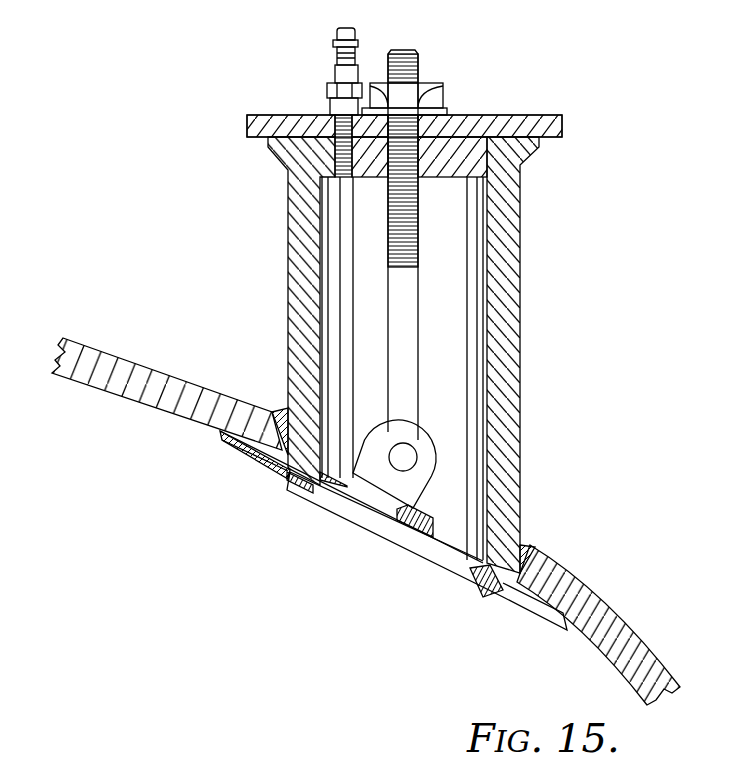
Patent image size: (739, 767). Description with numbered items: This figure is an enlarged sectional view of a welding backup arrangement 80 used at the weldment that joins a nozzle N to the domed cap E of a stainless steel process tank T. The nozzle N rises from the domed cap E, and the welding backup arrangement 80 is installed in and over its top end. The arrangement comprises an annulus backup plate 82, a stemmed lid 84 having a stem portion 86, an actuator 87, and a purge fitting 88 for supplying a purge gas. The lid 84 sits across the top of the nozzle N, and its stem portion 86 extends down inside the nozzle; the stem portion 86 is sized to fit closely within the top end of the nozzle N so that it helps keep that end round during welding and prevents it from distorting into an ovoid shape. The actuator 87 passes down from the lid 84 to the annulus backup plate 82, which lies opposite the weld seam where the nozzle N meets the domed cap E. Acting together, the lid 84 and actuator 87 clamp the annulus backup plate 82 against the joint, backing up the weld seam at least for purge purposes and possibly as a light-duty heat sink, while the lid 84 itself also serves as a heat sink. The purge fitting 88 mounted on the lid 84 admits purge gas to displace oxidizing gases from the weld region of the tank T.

The welding backup arrangement 80 is at (210, 119).
The annulus backup plate 82 is at (222, 432).
The stemmed lid 84 is at (505, 115).
The stem portion 86 is at (446, 176).
The actuator 87 is at (440, 100).
The purge fitting 88 is at (333, 40).
The nozzle N is at (522, 360).
The tank T is at (366, 494).
The domed cap E is at (78, 347).